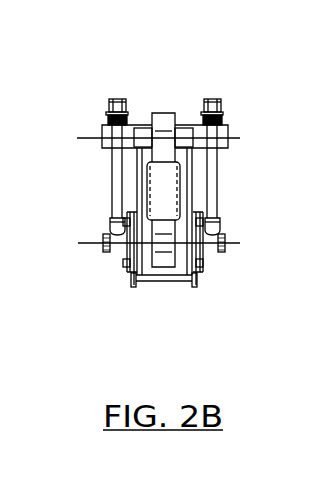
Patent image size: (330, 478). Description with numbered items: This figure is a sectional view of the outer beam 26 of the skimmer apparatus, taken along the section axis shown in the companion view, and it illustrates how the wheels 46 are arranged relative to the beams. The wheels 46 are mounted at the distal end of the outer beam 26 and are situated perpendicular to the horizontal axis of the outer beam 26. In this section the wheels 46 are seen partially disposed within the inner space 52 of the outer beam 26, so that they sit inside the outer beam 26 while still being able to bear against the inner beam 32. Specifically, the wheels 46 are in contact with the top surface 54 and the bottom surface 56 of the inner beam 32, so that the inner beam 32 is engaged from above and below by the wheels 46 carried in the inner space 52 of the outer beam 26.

The outer beam 26 is at (113, 183).
The inner beam 32 is at (162, 183).
The wheels 46 is at (165, 112).
The inner space 52 is at (136, 174).
The top surface 54 is at (183, 162).
The bottom surface 56 is at (217, 223).